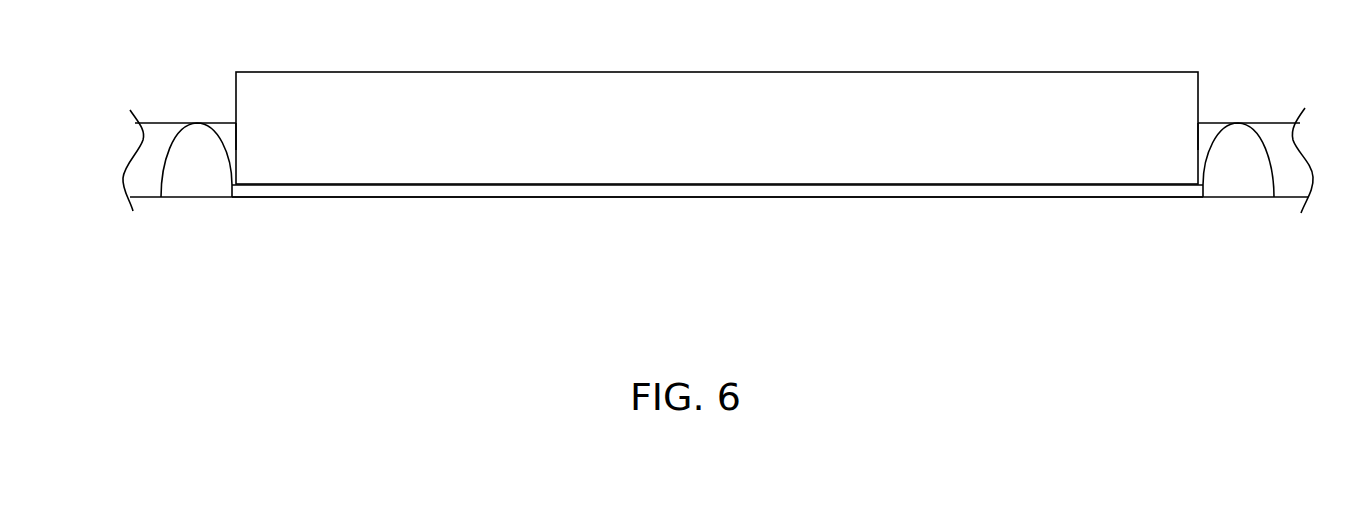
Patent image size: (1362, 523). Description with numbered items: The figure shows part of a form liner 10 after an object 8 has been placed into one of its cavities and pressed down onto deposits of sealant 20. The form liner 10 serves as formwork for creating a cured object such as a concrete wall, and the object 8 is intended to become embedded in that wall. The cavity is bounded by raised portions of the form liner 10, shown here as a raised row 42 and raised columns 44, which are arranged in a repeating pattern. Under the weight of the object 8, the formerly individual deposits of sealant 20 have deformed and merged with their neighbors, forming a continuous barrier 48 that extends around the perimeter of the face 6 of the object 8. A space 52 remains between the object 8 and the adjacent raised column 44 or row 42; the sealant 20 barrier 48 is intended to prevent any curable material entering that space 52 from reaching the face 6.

The form liner 10 is at (372, 299).
The object 8 is at (1130, 82).
The face 6 is at (443, 186).
The sealant 20 is at (943, 192).
The continuous barrier 48 is at (832, 192).
The row member 42 is at (1278, 122).
The column member 44 is at (197, 173).
The space 52 is at (228, 128).